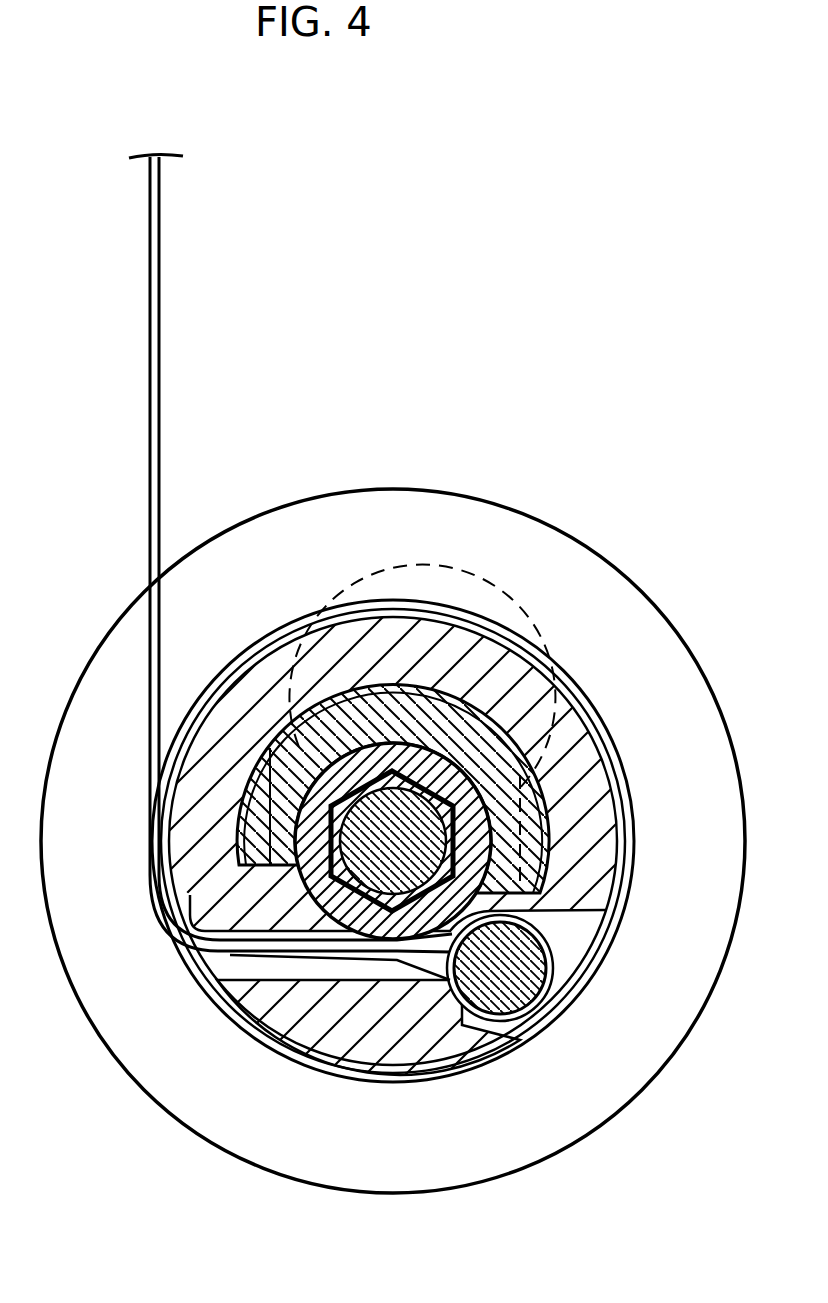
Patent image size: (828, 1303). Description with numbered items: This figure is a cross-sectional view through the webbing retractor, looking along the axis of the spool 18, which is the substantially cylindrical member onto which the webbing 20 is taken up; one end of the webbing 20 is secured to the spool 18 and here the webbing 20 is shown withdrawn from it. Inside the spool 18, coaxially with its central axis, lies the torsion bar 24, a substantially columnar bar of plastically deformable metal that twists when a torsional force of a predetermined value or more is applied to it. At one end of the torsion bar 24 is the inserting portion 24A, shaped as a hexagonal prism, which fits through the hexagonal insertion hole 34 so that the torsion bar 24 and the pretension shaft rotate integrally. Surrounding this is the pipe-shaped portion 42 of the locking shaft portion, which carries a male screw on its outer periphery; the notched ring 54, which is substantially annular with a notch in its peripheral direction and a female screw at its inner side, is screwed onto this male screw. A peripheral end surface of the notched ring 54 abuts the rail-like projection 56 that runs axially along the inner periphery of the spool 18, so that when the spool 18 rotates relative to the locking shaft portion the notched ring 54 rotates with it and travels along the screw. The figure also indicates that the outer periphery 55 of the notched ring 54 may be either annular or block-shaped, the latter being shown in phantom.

The spool 18 is at (556, 516).
The webbing 20 is at (161, 278).
The torsion bar 24 is at (367, 820).
The inserting portion 24A is at (390, 765).
The hexagonal insertion hole 34 is at (521, 648).
The pipe-shaped portion 42 is at (315, 735).
The notched ring 54 is at (523, 833).
The outer periphery 55 is at (546, 694).
The rail-like projection 56 is at (605, 912).